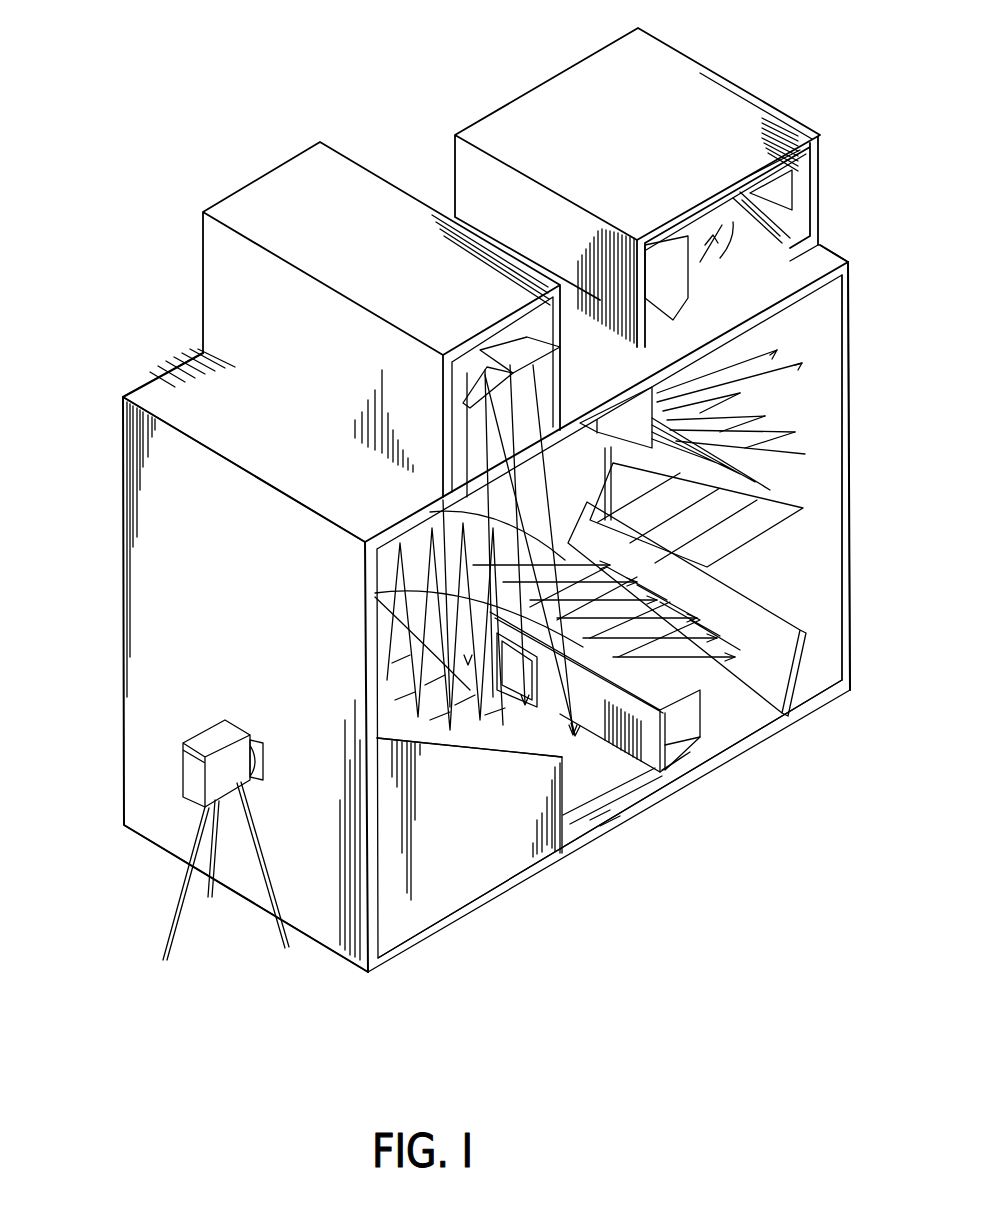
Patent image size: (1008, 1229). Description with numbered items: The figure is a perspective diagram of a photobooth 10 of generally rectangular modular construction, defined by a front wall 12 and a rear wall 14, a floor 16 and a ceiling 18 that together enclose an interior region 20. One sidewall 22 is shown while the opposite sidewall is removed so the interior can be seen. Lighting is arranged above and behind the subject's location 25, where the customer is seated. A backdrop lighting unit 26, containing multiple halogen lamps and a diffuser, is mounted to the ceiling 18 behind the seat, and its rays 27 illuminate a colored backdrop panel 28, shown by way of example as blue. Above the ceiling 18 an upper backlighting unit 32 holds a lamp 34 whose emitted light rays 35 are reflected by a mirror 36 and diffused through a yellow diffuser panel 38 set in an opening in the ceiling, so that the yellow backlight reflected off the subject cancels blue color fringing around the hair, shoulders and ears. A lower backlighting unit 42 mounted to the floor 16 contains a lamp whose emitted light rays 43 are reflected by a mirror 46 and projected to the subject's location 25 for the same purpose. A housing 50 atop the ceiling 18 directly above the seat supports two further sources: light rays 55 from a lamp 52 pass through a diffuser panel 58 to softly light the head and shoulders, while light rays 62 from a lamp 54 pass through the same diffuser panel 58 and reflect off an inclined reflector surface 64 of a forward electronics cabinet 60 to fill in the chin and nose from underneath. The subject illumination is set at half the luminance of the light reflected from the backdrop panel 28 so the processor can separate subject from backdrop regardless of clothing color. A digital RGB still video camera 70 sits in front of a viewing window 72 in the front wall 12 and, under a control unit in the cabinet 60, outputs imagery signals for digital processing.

The photobooth 10 is at (866, 373).
The front wall 12 is at (132, 768).
The rear wall 14 is at (851, 436).
The floor 16 is at (826, 684).
The ceiling 18 is at (140, 390).
The interior region 20 is at (622, 788).
The sidewall 22 is at (397, 537).
The subject's location 25 is at (506, 722).
The backdrop lighting unit 26 is at (612, 418).
The rays 27 is at (798, 382).
The backdrop panel 28 is at (823, 493).
The upper backlighting unit 32 is at (686, 73).
The lamp 34 is at (673, 263).
The emitted light rays 35 is at (720, 265).
The mirror 36 is at (764, 232).
The diffuser panel 38 is at (772, 265).
The lower backlighting unit 42 is at (700, 730).
The emitted light rays 43 is at (718, 683).
The mirror 46 is at (770, 626).
The housing 50 is at (203, 212).
The lamp 52 is at (528, 340).
The lamp 54 is at (462, 392).
The light rays 55 is at (440, 510).
The diffuser panel 58 is at (530, 445).
The forward electronics cabinet 60 is at (450, 896).
The light rays 62 is at (375, 593).
The inclined reflector surface 64 is at (467, 738).
The digital RGB still video camera 70 is at (212, 726).
The viewing window 72 is at (263, 745).